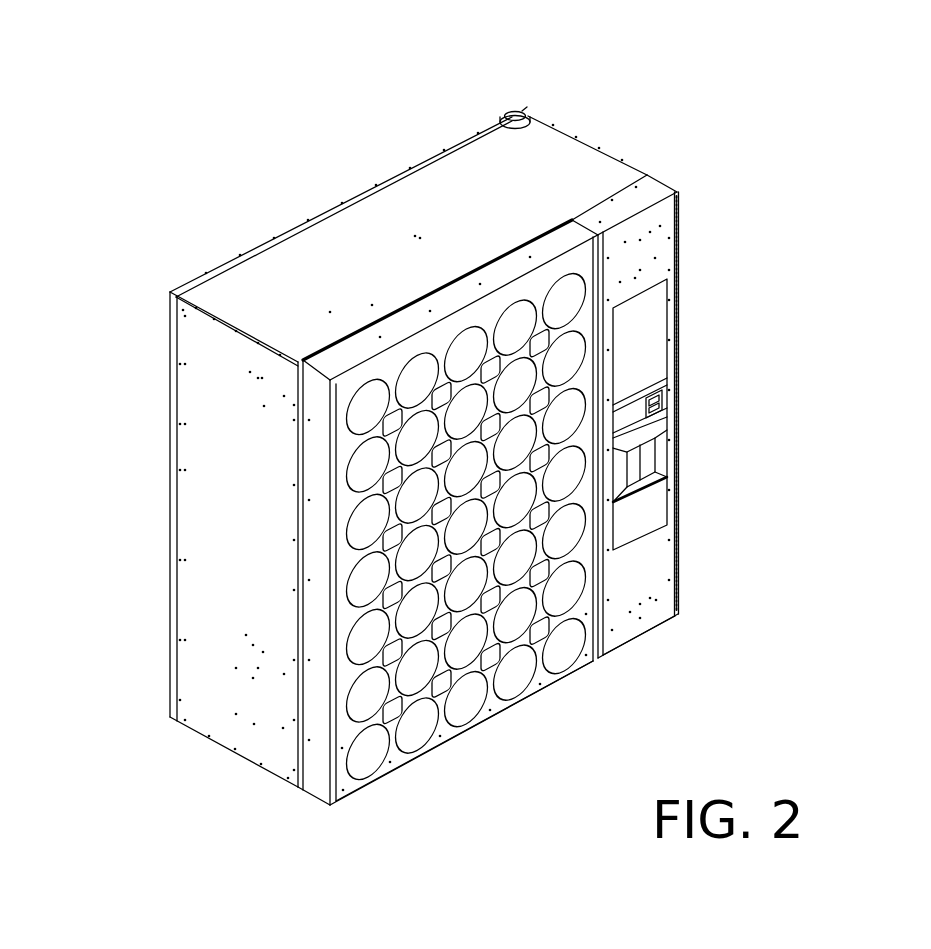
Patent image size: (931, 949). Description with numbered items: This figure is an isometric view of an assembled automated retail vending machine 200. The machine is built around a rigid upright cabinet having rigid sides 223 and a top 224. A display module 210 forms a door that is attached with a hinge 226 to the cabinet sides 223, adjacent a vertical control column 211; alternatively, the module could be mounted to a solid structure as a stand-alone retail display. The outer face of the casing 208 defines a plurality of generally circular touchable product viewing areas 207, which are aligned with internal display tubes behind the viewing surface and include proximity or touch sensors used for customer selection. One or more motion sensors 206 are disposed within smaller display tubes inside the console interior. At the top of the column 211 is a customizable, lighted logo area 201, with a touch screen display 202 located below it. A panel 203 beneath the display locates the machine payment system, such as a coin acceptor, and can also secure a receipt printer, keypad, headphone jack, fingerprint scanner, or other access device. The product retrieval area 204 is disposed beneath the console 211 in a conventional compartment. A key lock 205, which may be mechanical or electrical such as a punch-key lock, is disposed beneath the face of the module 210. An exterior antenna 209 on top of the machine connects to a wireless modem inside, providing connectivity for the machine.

The automated retail vending machine 200 is at (386, 80).
The lighted logo area 201 is at (697, 413).
The touch screen display 202 is at (704, 389).
The panel 203 is at (709, 382).
The product retrieval area 204 is at (709, 445).
The key lock 205 is at (568, 521).
The motion sensors 206 is at (594, 530).
The product viewing areas 207 is at (333, 430).
The casing 208 is at (208, 529).
The exterior antenna 209 is at (643, 96).
The display module 210 is at (538, 252).
The vertical control column 211 is at (684, 174).
The rigid sides 223 is at (240, 520).
The top 224 is at (418, 229).
The hinge 226 is at (298, 462).